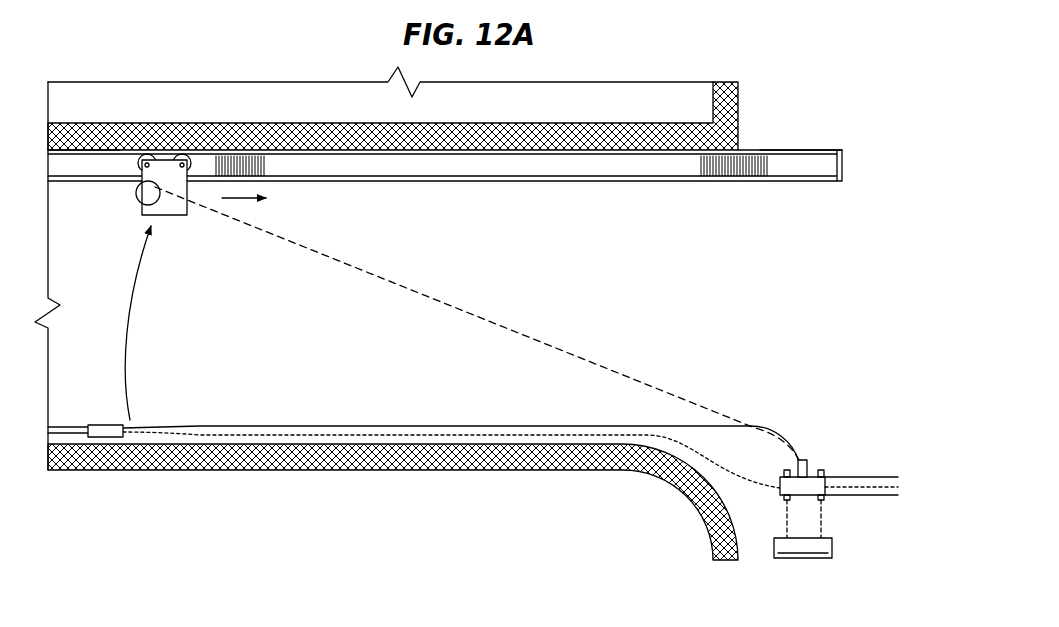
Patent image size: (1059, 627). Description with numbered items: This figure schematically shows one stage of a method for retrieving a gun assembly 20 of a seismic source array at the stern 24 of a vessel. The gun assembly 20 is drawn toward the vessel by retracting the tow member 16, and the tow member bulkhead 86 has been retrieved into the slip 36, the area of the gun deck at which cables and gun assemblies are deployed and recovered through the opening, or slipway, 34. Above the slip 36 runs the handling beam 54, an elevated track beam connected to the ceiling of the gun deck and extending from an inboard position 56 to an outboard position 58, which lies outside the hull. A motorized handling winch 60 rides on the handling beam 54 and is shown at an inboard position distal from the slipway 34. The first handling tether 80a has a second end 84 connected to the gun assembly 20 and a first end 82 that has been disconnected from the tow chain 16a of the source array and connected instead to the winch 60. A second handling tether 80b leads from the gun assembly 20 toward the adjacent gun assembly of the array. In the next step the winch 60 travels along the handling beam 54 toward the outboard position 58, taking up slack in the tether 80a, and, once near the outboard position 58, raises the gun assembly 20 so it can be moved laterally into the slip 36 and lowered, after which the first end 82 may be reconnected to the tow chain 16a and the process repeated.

The tow member 16 is at (66, 427).
The tow member portion 16a is at (407, 434).
The gun assembly 20 is at (812, 560).
The stern 24 is at (705, 526).
The opening 34 is at (814, 301).
The slip 36 is at (690, 308).
The handling beam 54 is at (550, 168).
The inboard position 56 is at (68, 165).
The outboard position 58 is at (822, 170).
The winch 60 is at (185, 227).
The handling tether 80a is at (433, 296).
The second handling tether 80b is at (866, 478).
The first end 82 is at (138, 426).
The second end 84 is at (806, 458).
The tow member bulkhead 86 is at (104, 432).